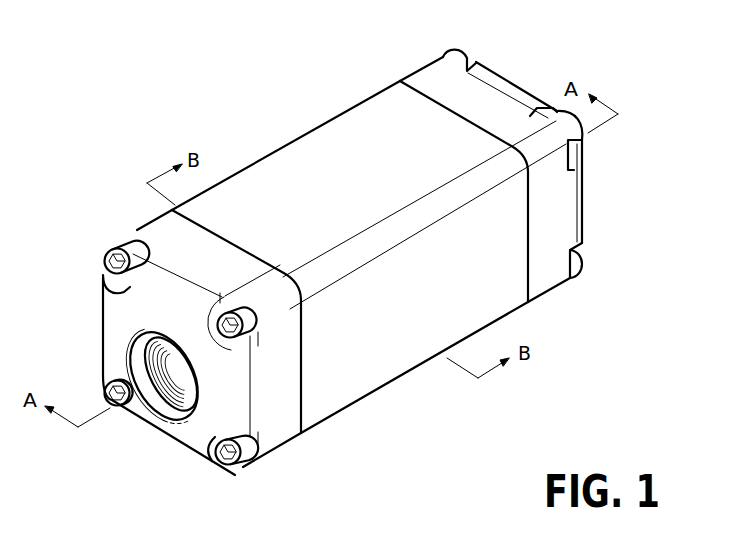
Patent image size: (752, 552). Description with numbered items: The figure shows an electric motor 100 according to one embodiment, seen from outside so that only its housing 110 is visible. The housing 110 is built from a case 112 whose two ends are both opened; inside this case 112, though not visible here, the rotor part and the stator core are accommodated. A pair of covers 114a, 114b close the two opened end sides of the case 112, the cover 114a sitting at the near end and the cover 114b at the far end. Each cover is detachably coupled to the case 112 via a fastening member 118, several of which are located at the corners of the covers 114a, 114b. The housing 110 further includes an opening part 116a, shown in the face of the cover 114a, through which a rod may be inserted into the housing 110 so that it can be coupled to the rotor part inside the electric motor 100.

The electric motor 100 is at (113, 51).
The housing 110 is at (428, 366).
The case 112 is at (364, 378).
The cover 114a is at (282, 432).
The cover 114b is at (542, 282).
The opening part 116a is at (160, 407).
The fastening member 118 is at (106, 258).